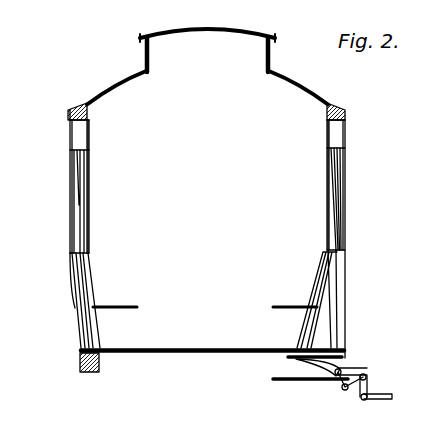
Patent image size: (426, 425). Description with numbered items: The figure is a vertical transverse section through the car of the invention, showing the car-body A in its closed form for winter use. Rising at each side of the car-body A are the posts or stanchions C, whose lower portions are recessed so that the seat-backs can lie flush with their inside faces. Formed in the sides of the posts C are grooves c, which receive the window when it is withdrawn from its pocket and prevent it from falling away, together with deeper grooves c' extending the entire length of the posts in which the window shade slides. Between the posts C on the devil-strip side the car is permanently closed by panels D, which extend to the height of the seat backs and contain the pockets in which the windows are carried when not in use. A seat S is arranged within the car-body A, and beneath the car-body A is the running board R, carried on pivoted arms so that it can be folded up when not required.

The car-body A is at (206, 200).
The posts or stanchions C is at (70, 228).
The grooves c is at (206, 200).
The grooves c' is at (231, 234).
The panels D is at (75, 305).
The seat S is at (130, 298).
The running board R is at (334, 378).